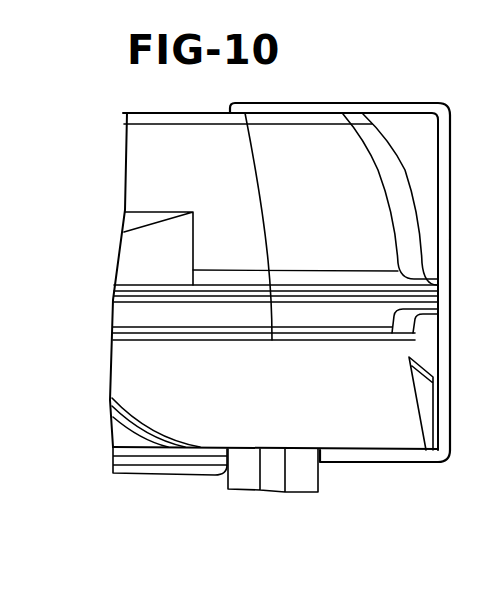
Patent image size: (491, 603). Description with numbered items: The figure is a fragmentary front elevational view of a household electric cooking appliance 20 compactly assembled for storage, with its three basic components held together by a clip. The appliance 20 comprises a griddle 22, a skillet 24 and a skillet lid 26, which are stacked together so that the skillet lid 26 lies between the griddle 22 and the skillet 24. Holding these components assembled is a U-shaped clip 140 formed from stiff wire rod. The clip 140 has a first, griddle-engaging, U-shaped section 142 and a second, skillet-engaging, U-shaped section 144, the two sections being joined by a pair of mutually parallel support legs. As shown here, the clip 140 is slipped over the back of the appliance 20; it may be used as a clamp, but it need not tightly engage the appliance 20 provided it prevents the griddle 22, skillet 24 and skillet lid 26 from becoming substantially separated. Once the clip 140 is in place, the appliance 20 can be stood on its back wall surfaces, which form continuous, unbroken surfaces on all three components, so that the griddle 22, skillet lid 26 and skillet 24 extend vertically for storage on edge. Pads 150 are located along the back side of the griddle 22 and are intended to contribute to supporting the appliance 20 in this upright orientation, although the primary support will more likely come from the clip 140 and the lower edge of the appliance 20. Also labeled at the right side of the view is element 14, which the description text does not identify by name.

The frame 14 is at (450, 240).
The household electric cooking appliance 20 is at (104, 215).
The griddle 22 is at (262, 430).
The skillet 24 is at (330, 200).
The skillet lid 26 is at (130, 315).
The U-shaped clip 140 is at (411, 466).
The first, griddle-engaging, U-shaped section 142 is at (340, 455).
The second, skillet-engaging, U-shaped section 144 is at (346, 102).
The pads 150 is at (418, 390).